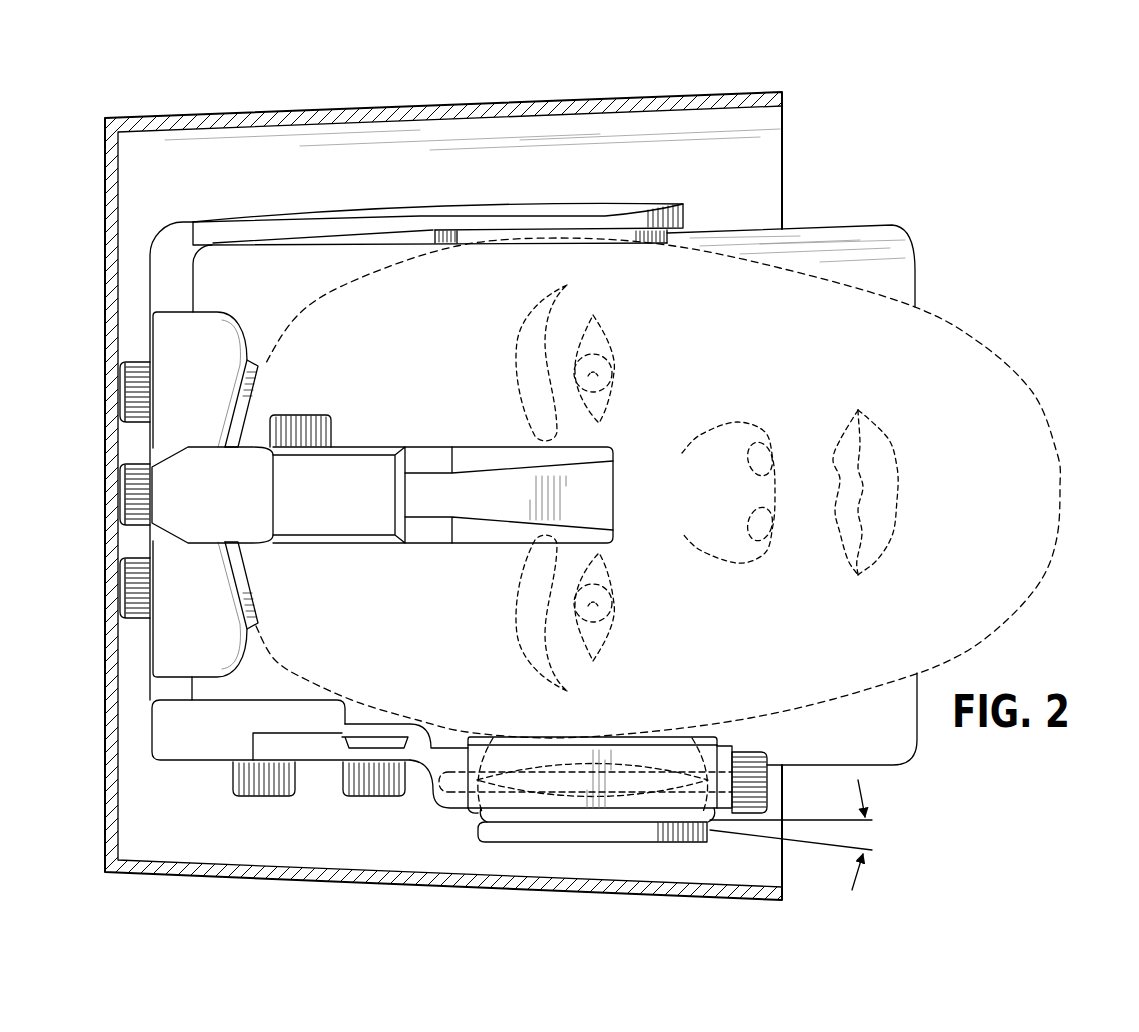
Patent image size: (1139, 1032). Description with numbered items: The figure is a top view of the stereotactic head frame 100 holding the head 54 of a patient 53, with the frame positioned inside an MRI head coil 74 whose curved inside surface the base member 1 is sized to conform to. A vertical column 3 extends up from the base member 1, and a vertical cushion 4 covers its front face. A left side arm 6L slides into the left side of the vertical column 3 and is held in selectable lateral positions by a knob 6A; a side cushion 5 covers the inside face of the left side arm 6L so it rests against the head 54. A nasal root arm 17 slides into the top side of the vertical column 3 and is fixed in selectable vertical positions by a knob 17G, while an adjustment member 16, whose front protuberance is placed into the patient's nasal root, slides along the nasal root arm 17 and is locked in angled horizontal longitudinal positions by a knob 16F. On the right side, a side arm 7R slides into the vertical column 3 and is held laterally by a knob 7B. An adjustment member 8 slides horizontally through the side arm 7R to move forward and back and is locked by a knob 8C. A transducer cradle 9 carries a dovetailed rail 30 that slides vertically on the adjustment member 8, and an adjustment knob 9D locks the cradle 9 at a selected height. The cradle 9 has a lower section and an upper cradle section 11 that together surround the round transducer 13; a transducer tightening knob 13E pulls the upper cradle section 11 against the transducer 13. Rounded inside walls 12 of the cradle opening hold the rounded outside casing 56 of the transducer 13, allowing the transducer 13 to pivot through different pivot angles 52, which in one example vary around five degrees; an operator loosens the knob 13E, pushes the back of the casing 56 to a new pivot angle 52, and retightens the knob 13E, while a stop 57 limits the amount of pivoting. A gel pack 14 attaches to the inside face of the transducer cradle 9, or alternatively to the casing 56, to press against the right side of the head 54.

The base member 1 is at (918, 281).
The vertical column 3 is at (232, 312).
The vertical cushion 4 is at (252, 590).
The side cushion 5 is at (594, 246).
The knob 6A is at (132, 423).
The left side arm 6L is at (545, 201).
The knob 7B is at (132, 619).
The right side arm 7R is at (305, 700).
The transducer adjustment member 8 is at (318, 760).
The knob 8C is at (265, 797).
The transducer cradle 9 is at (585, 733).
The adjustment knob 9D is at (375, 797).
The upper cradle section 11 is at (530, 746).
The rounded inside walls 12 is at (491, 737).
The transducer 13 is at (590, 844).
The transducer tightening knob 13E is at (770, 780).
The gel pack 14 is at (605, 746).
The adjustment member 16 is at (497, 447).
The knob 16F is at (302, 414).
The nasal root arm 17 is at (362, 450).
The knob 17G is at (132, 525).
The dovetailed rail 30 is at (375, 737).
The pivot angle 52 is at (864, 872).
The patient 53 is at (1018, 325).
The head 54 is at (1046, 578).
The casing 56 is at (484, 826).
The stop 57 is at (478, 817).
The MRI head coil 74 is at (445, 94).
The stereotactic head frame 100 is at (495, 474).